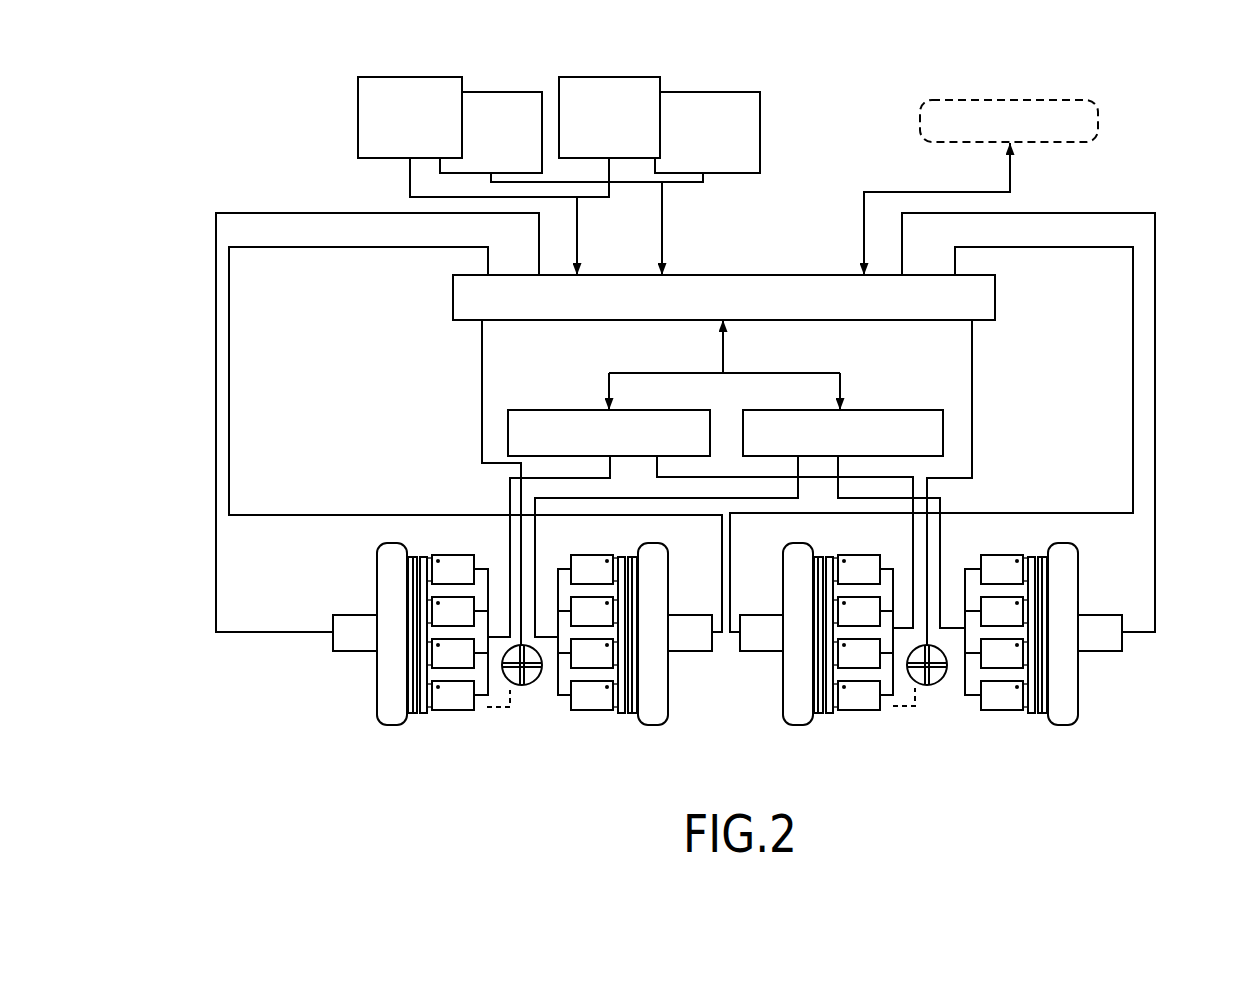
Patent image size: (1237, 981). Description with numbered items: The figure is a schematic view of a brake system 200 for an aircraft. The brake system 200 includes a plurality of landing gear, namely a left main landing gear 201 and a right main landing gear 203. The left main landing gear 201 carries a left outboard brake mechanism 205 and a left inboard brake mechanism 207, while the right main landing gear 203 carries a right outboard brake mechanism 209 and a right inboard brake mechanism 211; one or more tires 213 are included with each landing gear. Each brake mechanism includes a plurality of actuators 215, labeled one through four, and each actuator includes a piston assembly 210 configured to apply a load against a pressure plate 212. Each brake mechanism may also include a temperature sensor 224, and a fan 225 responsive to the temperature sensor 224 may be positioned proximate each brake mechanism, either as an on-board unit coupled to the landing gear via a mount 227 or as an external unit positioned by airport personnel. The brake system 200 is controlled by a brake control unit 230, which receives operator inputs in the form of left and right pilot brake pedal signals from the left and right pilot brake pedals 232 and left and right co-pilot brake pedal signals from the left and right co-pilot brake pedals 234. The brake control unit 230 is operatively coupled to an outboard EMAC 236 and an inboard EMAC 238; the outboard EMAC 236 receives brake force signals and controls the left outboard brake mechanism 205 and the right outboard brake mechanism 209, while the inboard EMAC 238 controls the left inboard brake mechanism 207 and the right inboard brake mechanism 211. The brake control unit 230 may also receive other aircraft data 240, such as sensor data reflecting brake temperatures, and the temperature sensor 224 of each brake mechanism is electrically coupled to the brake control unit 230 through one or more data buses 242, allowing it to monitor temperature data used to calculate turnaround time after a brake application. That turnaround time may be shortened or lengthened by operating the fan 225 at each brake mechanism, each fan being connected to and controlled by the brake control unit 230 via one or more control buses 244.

The brake system 200 is at (177, 138).
The left main landing gear 201 is at (538, 638).
The right main landing gear 203 is at (933, 637).
The left outboard brake mechanism 205 is at (445, 545).
The left inboard brake mechanism 207 is at (538, 631).
The right outboard brake mechanism 209 is at (1008, 540).
The right inboard brake mechanism 211 is at (875, 537).
The piston assembly 210 is at (604, 710).
The pressure plate 212 is at (628, 715).
The tire 213 is at (660, 725).
The actuators 215 is at (566, 724).
The temperature sensor 224 is at (335, 652).
The fan 225 is at (538, 688).
The mount 227 is at (487, 710).
The brake control unit 230 is at (765, 310).
The left and right pilot brake pedals 232 is at (452, 60).
The left and right co-pilot brake pedals 234 is at (622, 58).
The outboard EMAC 236 is at (557, 410).
The inboard EMAC 238 is at (910, 410).
The aircraft data 240 is at (1005, 100).
The data buses 242 is at (229, 418).
The control buses 244 is at (482, 383).